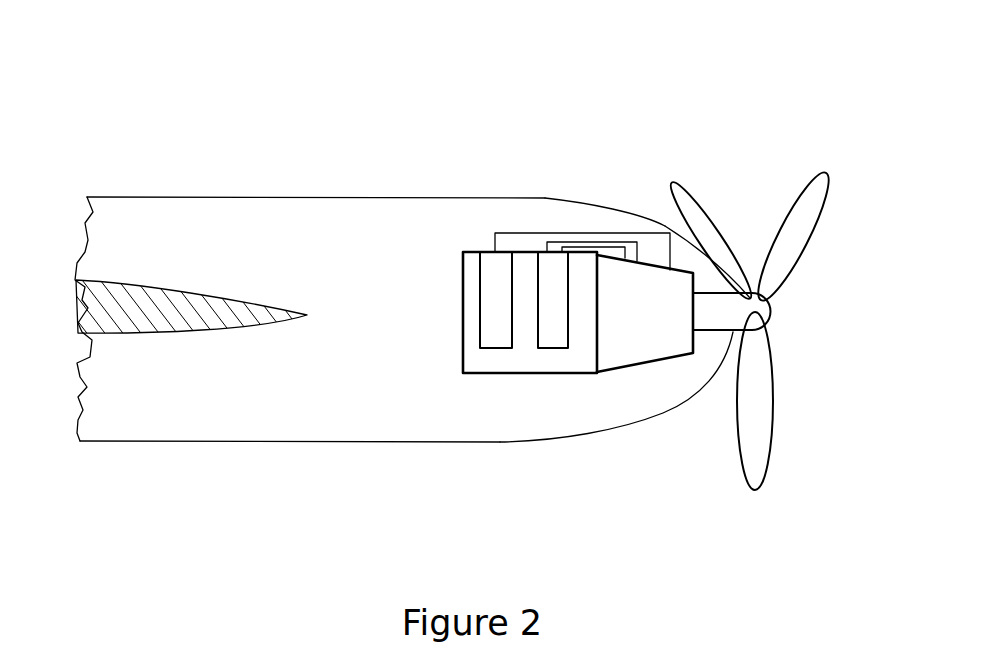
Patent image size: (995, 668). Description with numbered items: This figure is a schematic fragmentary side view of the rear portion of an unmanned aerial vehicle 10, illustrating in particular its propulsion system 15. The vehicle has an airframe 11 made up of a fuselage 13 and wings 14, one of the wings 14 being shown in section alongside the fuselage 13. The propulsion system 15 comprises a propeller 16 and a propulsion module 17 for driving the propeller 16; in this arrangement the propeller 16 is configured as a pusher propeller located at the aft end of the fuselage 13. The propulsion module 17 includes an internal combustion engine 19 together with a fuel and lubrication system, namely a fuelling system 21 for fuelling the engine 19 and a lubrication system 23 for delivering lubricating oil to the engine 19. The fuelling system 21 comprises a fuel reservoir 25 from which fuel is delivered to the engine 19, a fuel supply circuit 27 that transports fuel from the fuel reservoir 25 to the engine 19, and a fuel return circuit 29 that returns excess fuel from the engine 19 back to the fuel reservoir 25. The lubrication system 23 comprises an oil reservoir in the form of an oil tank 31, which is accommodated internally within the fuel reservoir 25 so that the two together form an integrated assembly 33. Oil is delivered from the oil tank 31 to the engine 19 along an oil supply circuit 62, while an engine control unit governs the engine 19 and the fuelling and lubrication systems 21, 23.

The unmanned aerial vehicle 10 is at (171, 131).
The airframe 11 is at (310, 276).
The fuselage 13 is at (590, 266).
The wings 14 is at (185, 396).
The propulsion system 15 is at (675, 421).
The propeller 16 is at (777, 437).
The propulsion module 17 is at (709, 422).
The internal combustion engine 19 is at (673, 266).
The fuelling system 21 is at (524, 394).
The lubrication system 23 is at (407, 419).
The fuel reservoir 25 is at (623, 414).
The fuel supply circuit 27 is at (613, 247).
The fuel return circuit 29 is at (558, 242).
The oil tank 31 is at (404, 378).
The integrated assembly 33 is at (503, 407).
The oil supply circuit 62 is at (512, 233).